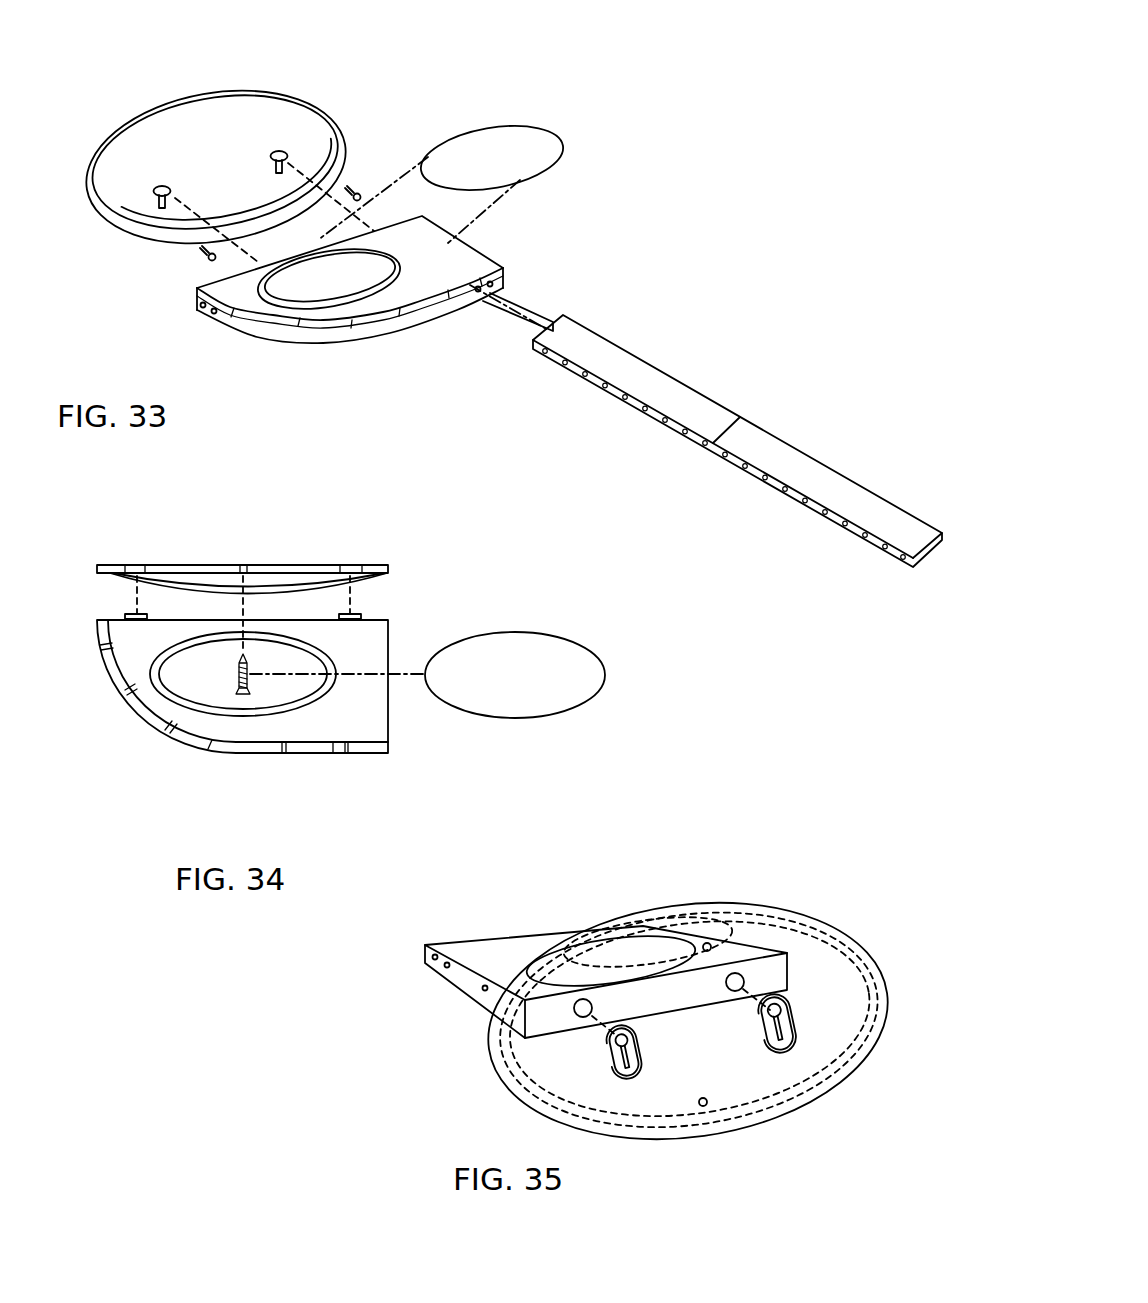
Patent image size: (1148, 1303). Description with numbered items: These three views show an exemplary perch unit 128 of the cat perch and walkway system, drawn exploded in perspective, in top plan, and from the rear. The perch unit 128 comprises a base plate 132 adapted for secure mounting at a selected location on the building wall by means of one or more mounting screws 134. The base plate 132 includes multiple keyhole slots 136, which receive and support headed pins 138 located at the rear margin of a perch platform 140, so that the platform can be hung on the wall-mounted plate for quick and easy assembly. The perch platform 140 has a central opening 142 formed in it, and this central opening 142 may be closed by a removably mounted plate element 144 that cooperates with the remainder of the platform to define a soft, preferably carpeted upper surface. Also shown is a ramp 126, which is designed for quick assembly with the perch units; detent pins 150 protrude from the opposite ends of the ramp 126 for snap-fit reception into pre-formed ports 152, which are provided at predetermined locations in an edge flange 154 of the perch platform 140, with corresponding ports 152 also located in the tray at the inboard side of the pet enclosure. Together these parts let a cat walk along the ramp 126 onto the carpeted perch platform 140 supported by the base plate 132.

In FIG. 33, the ramp 126 is at (578, 364).
In FIG. 33, the perch unit 128 is at (495, 72).
In FIG. 34, the perch unit 128 is at (468, 557).
In FIG. 35, the perch unit 128 is at (628, 872).
In FIG. 33, the base plate 132 is at (312, 112).
In FIG. 34, the base plate 132 is at (242, 580).
In FIG. 35, the base plate 132 is at (707, 1021).
In FIG. 33, the mounting screw 134 is at (321, 189).
In FIG. 34, the mounting screw 134 is at (344, 653).
In FIG. 33, the keyhole slot 136 is at (153, 197).
In FIG. 35, the keyhole slot 136 is at (655, 1073).
In FIG. 34, the headed pin 138 is at (241, 596).
In FIG. 35, the headed pin 138 is at (576, 1011).
In FIG. 33, the perch platform 140 is at (483, 251).
In FIG. 34, the perch platform 140 is at (272, 711).
In FIG. 35, the perch platform 140 is at (603, 967).
In FIG. 33, the central opening 142 is at (328, 324).
In FIG. 34, the central opening 142 is at (203, 698).
In FIG. 33, the plate element 144 is at (570, 143).
In FIG. 34, the plate element 144 is at (548, 665).
In FIG. 35, the plate element 144 is at (672, 950).
In FIG. 33, the detent pin 150 is at (508, 330).
In FIG. 33, the port 152 is at (212, 314).
In FIG. 35, the port 152 is at (445, 968).
In FIG. 33, the edge flange 154 is at (386, 348).
In FIG. 35, the edge flange 154 is at (423, 1009).